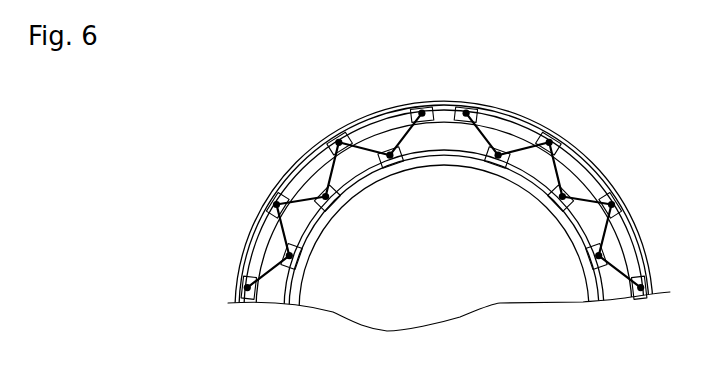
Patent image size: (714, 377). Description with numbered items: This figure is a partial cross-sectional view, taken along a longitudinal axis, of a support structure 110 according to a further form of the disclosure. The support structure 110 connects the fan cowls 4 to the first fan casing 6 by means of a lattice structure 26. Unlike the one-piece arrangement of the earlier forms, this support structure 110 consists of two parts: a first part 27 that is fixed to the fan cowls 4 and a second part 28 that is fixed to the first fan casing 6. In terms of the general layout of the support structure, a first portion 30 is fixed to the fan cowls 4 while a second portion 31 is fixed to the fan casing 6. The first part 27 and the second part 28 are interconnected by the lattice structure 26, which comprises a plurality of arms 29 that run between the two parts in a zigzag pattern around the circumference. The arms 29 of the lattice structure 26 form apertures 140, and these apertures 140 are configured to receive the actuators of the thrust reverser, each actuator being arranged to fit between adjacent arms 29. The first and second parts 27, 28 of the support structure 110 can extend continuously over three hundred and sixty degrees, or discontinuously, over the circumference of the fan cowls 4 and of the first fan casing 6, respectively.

The fan cowls 4 is at (447, 99).
The first fan casing 6 is at (312, 280).
The lattice structure 26 is at (267, 287).
The first part 27 is at (548, 122).
The second part 28 is at (340, 208).
The arms 29 is at (320, 165).
The first portion 30 is at (372, 110).
The second portion 31 is at (392, 183).
The support structure 110 is at (338, 141).
The apertures 140 is at (507, 113).